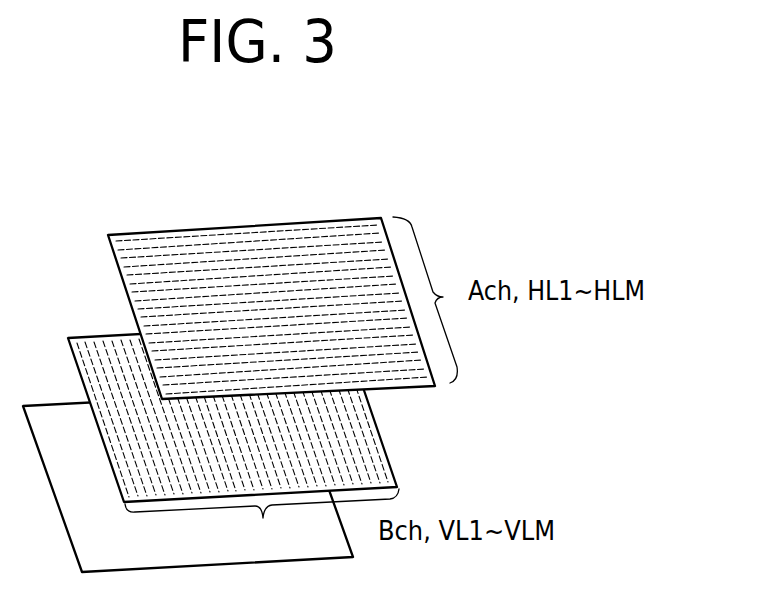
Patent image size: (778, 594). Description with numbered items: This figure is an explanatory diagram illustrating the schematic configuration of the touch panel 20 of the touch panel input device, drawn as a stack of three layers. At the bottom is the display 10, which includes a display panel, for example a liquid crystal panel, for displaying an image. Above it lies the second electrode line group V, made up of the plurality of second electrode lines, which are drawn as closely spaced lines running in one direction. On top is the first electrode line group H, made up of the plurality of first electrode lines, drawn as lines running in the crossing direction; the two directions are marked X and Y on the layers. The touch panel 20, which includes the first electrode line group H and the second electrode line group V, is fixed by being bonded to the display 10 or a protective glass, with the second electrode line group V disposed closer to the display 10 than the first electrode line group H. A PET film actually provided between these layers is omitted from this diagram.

The display 10 is at (52, 405).
The touch panel 20 is at (267, 260).
The first electrode line group H is at (133, 231).
The second electrode line group V is at (97, 336).
The X direction X is at (274, 306).
The Y direction Y is at (237, 409).